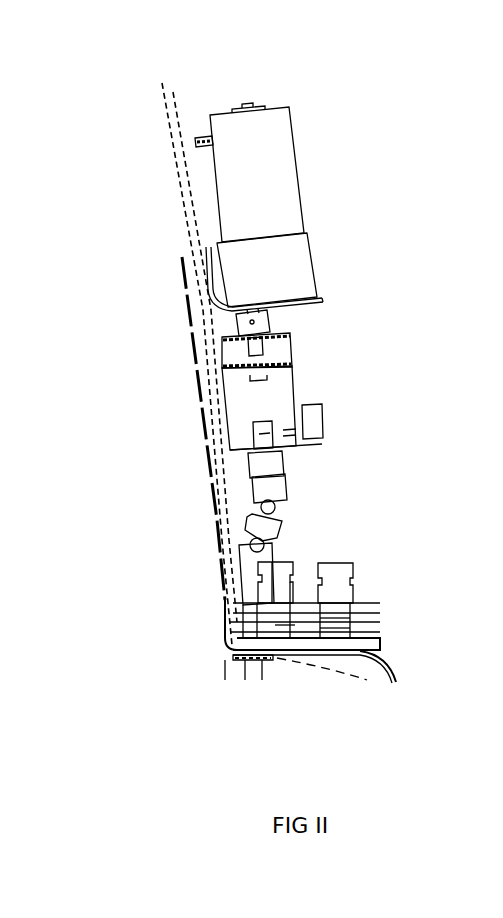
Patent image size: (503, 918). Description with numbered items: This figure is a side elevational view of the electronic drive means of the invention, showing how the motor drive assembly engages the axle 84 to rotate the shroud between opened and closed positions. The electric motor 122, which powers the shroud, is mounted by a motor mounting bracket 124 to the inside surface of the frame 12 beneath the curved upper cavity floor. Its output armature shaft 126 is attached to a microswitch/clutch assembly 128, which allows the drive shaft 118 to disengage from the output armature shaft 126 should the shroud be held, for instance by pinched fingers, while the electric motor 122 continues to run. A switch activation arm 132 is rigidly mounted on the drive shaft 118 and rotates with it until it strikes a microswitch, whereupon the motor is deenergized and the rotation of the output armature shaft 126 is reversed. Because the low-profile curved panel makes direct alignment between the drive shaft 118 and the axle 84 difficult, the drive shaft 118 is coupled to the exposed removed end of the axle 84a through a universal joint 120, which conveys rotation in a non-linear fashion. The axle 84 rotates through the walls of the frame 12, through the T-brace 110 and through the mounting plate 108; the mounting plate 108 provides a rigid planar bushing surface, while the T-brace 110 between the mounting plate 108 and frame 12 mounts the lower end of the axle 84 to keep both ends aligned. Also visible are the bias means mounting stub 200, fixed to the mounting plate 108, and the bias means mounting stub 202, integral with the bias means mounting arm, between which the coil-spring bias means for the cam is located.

The frame 12 is at (332, 697).
The axle 84 is at (247, 680).
The removed end of axle 84a is at (177, 543).
The mounting plate 108 is at (357, 621).
The T-brace 110 is at (431, 659).
The drive shaft 118 is at (252, 472).
The universal joint 120 is at (282, 522).
The electric motor 122 is at (322, 161).
The motor mounting bracket 124 is at (319, 259).
The output armature shaft 126 is at (171, 293).
The microswitch/clutch assembly 128 is at (340, 323).
The switch activation arm 132 is at (198, 388).
The bias means mounting stub 200 is at (382, 582).
The bias means mounting stub 202 is at (287, 562).